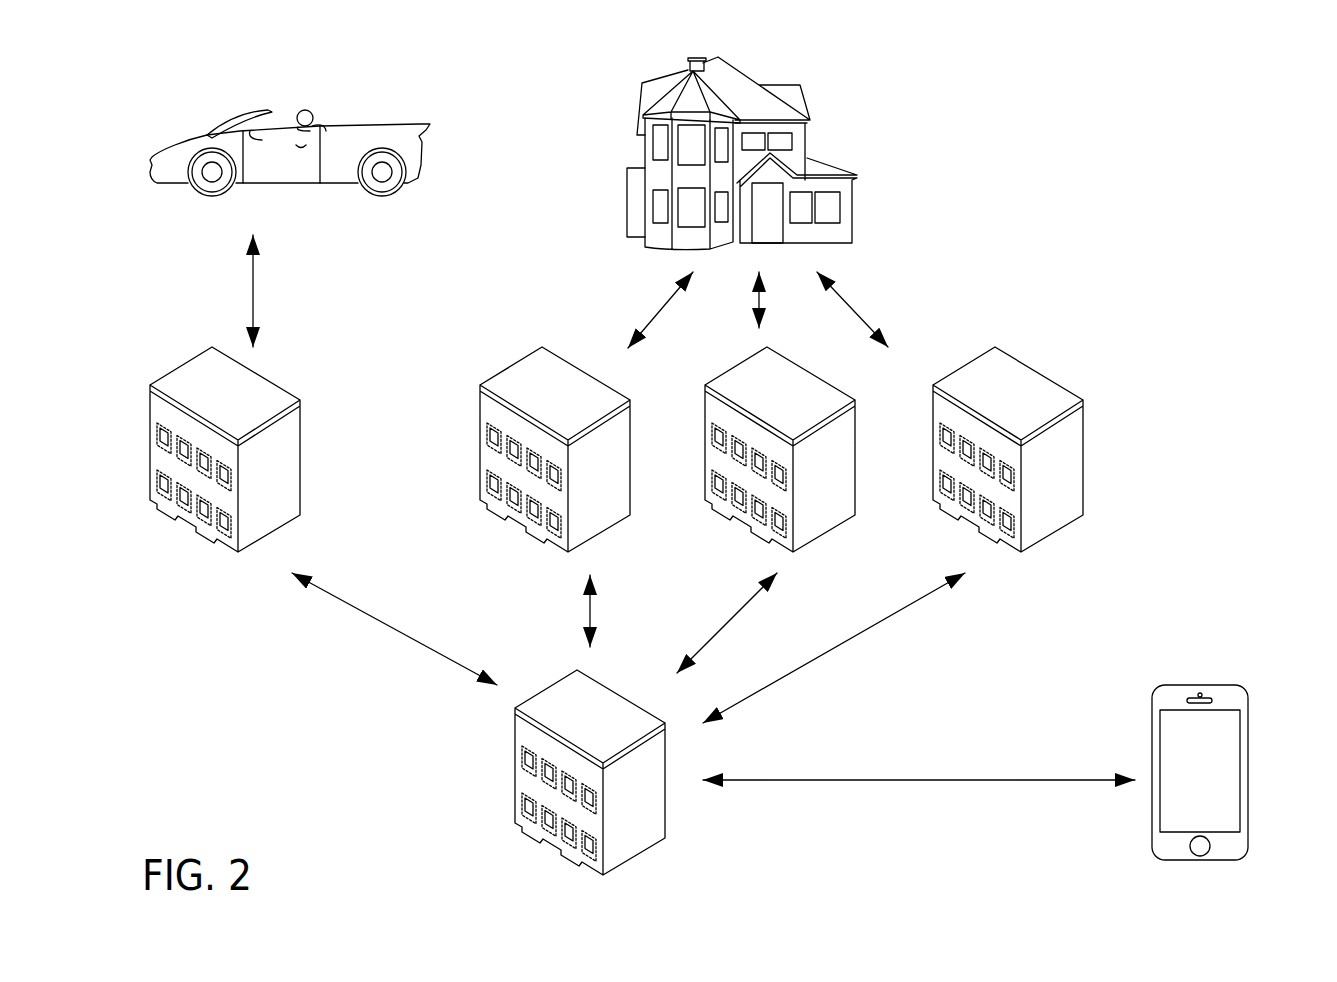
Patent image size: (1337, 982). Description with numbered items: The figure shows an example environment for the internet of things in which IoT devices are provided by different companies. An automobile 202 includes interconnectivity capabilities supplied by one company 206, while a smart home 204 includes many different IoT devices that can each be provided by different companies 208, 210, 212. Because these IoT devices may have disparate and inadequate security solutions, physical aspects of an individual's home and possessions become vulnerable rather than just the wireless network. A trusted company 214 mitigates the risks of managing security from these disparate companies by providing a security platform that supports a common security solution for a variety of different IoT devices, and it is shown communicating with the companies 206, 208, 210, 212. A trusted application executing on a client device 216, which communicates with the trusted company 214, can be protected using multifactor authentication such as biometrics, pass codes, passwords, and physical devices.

The automobile 202 is at (380, 123).
The smart home 204 is at (800, 85).
The company 206 is at (300, 402).
The company 208 is at (532, 352).
The company 210 is at (857, 402).
The company 212 is at (1058, 384).
The trusted company 214 is at (515, 773).
The client device 216 is at (1210, 683).